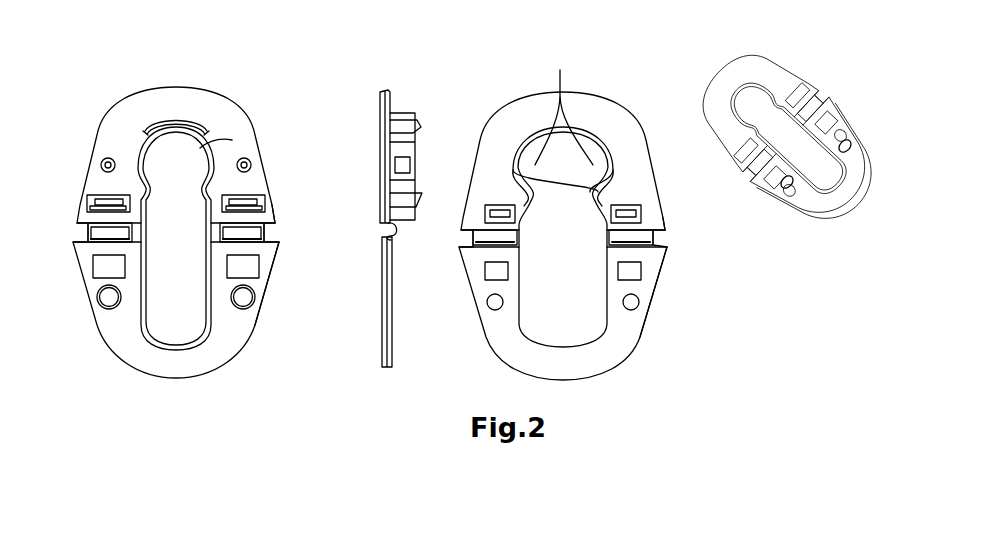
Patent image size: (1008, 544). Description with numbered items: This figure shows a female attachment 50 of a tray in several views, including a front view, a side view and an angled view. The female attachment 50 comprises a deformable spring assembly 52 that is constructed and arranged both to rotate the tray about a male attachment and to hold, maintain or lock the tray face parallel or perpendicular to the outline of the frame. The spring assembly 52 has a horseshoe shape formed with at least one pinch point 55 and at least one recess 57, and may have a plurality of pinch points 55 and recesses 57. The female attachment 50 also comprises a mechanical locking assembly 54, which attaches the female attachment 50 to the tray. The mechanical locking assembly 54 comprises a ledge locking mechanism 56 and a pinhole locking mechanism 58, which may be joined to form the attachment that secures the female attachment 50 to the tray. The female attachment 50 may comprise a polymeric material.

The female attachment 50 is at (160, 97).
The deformable spring assembly 52 is at (136, 155).
The mechanical locking assembly 54 is at (268, 176).
The pinch point 55 is at (206, 178).
The ledge locking mechanism 56 is at (102, 265).
The recess 57 is at (200, 148).
The pinhole locking mechanism 58 is at (104, 165).